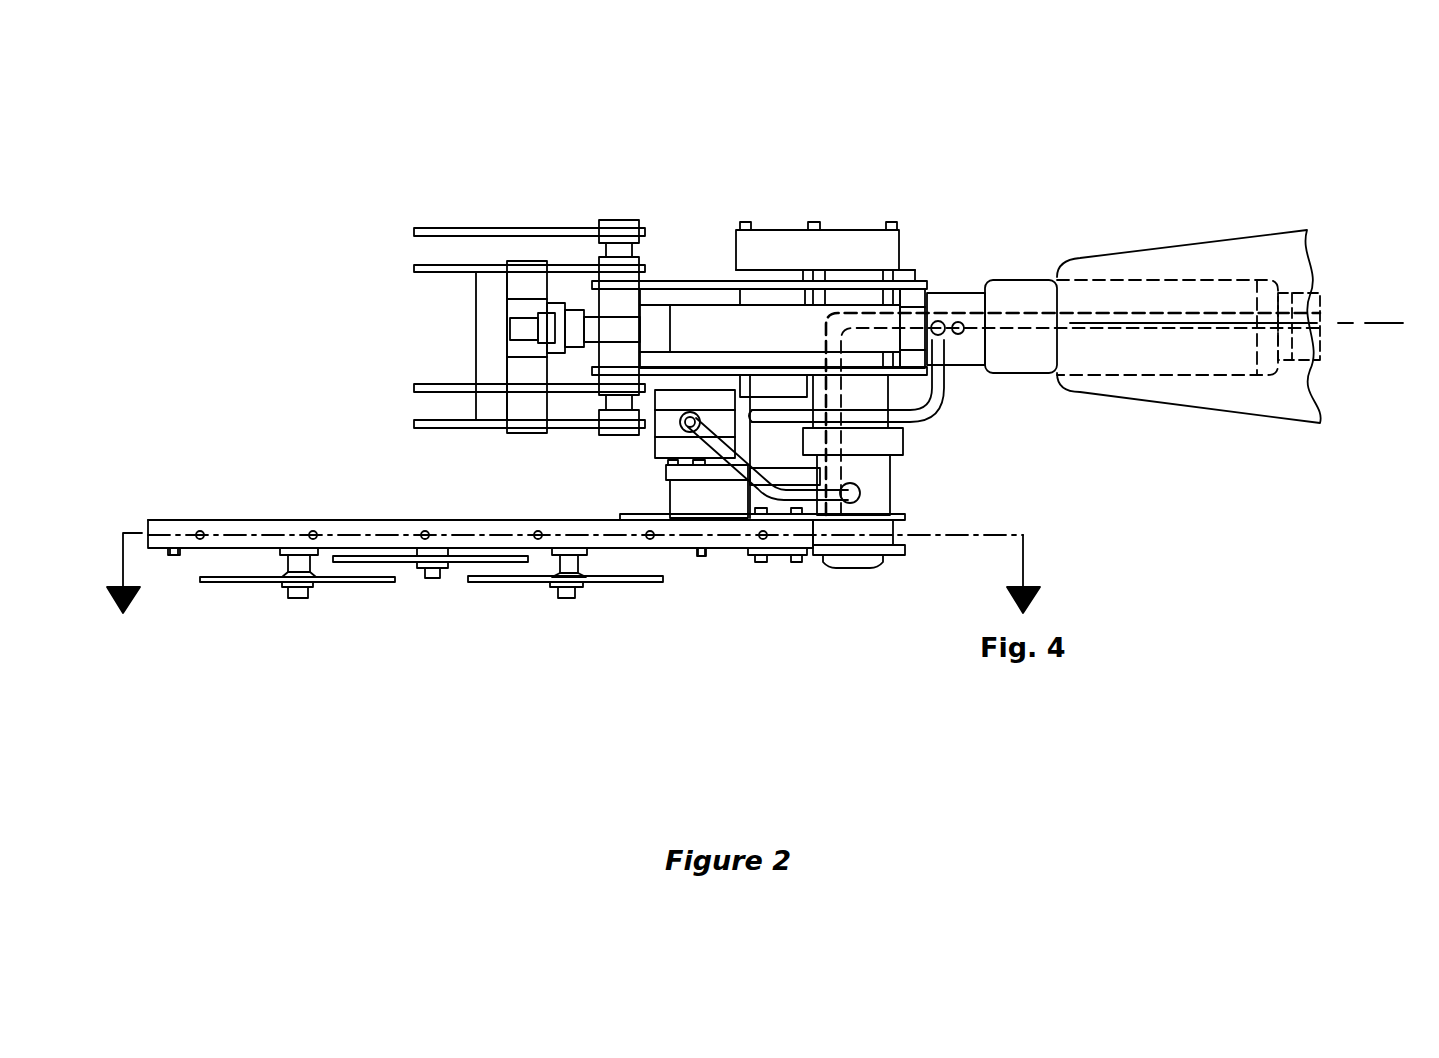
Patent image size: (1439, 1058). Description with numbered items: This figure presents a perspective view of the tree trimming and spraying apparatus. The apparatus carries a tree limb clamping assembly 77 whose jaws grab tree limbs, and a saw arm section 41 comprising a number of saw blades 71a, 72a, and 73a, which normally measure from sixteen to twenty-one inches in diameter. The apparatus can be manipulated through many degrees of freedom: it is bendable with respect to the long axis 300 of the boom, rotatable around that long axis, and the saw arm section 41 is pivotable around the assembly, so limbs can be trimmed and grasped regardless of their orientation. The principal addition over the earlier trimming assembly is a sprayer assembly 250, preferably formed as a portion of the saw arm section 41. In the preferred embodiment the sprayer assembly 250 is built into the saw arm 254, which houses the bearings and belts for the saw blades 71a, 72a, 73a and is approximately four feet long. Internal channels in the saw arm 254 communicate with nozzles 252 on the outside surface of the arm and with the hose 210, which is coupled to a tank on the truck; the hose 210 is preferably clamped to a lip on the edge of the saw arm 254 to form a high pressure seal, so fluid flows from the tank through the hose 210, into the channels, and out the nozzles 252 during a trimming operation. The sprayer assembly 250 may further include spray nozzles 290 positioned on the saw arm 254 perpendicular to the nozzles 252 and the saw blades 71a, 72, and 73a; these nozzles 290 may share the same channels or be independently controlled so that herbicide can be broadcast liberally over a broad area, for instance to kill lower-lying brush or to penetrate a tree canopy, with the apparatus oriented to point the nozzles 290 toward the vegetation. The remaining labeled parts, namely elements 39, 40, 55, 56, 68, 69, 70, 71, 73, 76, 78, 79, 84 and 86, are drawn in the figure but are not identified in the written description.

The boom 39 is at (1234, 230).
The drive housing 40 is at (853, 221).
The saw arm section 41 is at (880, 598).
The coupling 55 is at (1038, 282).
The hydraulic hose 56 is at (887, 392).
The mounting block 68 is at (897, 512).
The mounting plate 69 is at (813, 563).
The bracket 70 is at (910, 560).
The first blade mount 71 is at (297, 598).
The saw blade 71a is at (237, 582).
The saw blade 72 is at (428, 578).
The saw blade 72a is at (458, 562).
The third blade mount 73 is at (562, 598).
The saw blade 73a is at (617, 582).
The bearing block 76 is at (667, 445).
The tree limb clamping assembly 77 is at (658, 247).
The drive plate 78 is at (707, 280).
The hydraulic cylinder 79 is at (685, 367).
The frame rails 84 is at (495, 228).
The hose fitting 86 is at (913, 283).
The hose 210 is at (1015, 313).
The sprayer assembly 250 is at (125, 520).
The nozzles 252 is at (650, 533).
The saw arm 254 is at (367, 517).
The spray nozzles 290 is at (180, 555).
The long axis of the boom 300 is at (1380, 323).